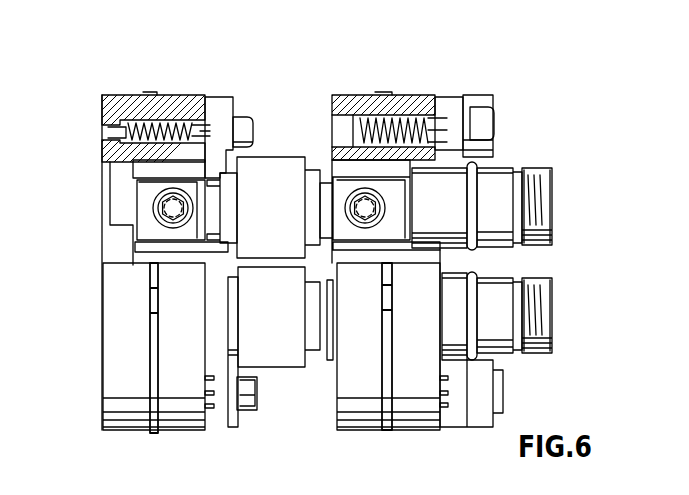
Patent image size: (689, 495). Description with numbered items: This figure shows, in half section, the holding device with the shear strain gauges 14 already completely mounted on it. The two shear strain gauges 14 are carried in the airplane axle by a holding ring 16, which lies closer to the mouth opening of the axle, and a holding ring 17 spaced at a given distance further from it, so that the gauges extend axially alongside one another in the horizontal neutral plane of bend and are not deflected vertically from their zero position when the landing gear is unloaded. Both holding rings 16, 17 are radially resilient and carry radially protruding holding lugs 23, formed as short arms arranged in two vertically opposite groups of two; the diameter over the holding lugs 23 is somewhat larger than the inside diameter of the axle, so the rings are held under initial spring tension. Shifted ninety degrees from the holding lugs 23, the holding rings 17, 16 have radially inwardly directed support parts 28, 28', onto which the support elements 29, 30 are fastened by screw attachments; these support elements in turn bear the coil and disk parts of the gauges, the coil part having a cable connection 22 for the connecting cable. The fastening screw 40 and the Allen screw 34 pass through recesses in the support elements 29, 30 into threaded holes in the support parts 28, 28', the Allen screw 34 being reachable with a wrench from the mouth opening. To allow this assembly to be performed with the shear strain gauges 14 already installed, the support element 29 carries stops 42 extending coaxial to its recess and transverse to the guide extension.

The shear strain gauge 14 is at (277, 168).
The holding ring 16 is at (407, 403).
The holding ring 17 is at (183, 403).
The cable connection 22 is at (537, 305).
The holding lug 23 is at (148, 303).
The support part 28 is at (122, 124).
The support part 28' is at (368, 122).
The support element 29 is at (443, 102).
The support element 30 is at (220, 97).
The Allen screw 34 is at (245, 122).
The fastening screw 40 is at (487, 122).
The stop 42 is at (483, 100).